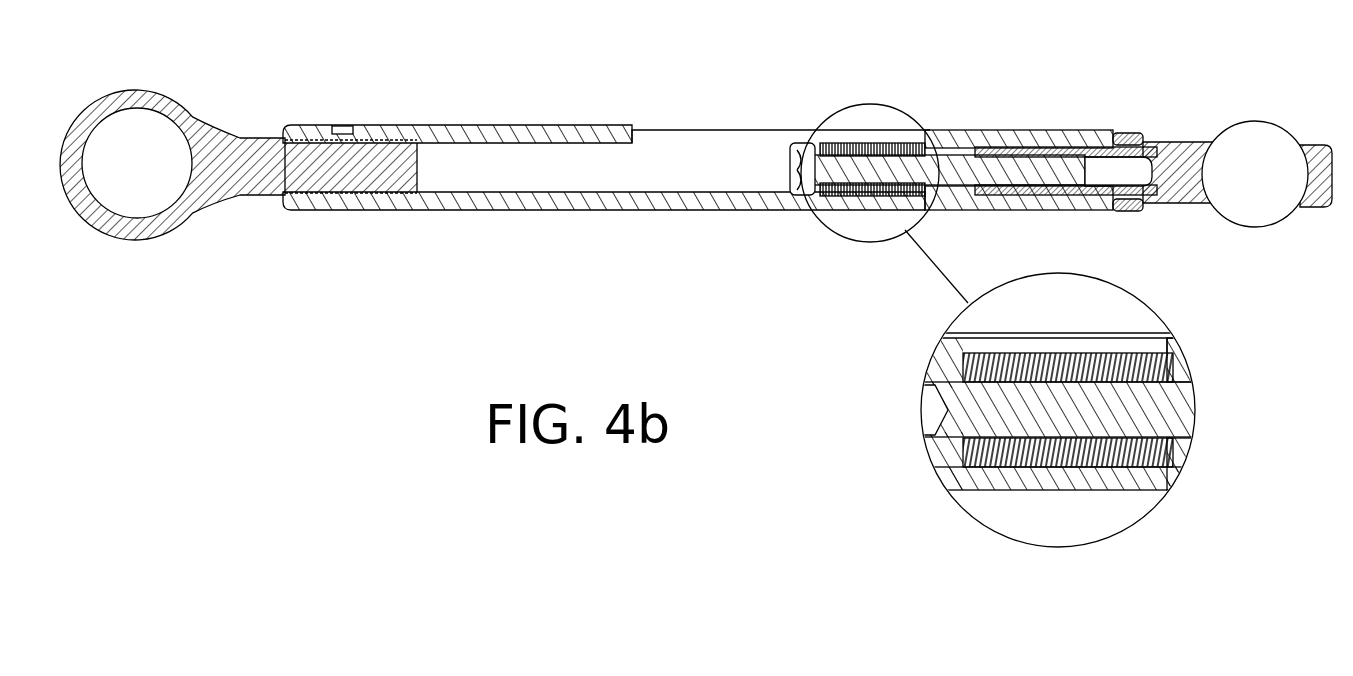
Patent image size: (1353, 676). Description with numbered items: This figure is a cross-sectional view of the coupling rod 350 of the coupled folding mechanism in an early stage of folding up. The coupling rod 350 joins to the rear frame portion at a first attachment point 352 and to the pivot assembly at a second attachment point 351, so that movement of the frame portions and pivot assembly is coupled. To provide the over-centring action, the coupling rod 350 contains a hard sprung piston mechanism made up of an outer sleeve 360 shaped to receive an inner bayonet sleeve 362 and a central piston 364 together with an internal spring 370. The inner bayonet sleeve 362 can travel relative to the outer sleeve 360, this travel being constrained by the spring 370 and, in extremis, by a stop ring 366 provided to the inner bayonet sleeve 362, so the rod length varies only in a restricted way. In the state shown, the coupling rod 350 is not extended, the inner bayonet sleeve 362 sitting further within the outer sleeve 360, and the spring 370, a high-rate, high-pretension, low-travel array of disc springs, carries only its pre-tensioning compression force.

The coupling rod 350 is at (480, 210).
The second attachment point 351 is at (131, 118).
The first attachment point 352 is at (1255, 120).
The outer sleeve 360 is at (990, 135).
The inner bayonet sleeve 362 is at (1065, 148).
The central piston 364 is at (1005, 180).
The stop ring 366 is at (1130, 133).
The spring 370 is at (865, 143).